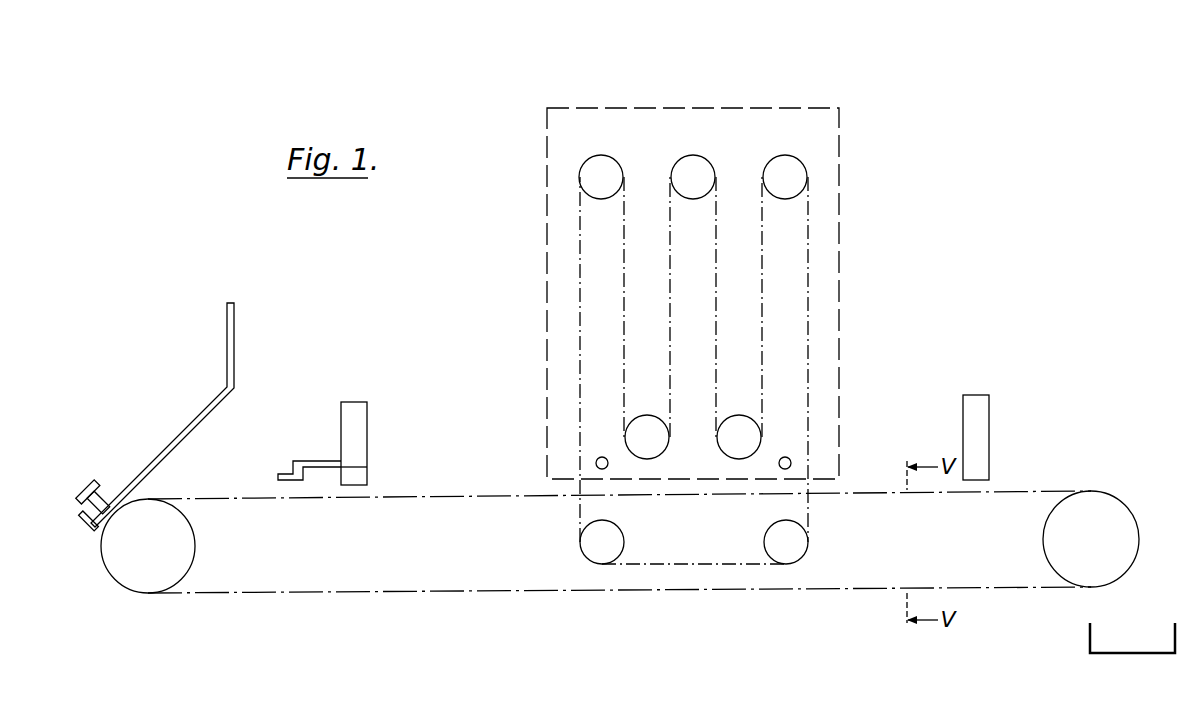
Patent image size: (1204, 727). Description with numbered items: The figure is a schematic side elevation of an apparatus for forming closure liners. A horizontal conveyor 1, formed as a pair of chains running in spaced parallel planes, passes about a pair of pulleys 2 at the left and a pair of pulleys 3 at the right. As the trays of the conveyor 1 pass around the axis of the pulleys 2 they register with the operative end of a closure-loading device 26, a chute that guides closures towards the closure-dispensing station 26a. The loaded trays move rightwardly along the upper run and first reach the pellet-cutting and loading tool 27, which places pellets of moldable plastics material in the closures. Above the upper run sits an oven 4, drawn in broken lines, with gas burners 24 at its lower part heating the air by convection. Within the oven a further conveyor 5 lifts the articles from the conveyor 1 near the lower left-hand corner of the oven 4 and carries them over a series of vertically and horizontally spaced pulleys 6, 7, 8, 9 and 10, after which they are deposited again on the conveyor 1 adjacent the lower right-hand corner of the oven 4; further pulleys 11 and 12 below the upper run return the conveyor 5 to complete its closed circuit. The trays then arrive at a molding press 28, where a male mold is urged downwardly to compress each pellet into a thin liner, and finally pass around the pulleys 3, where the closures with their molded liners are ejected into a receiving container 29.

The horizontal conveyor 1 is at (338, 593).
The pulleys 2 is at (150, 580).
The pulleys 3 is at (1090, 507).
The oven 4 is at (546, 200).
The further conveyor 5 is at (807, 257).
The pulley 6 is at (601, 168).
The pulley 7 is at (637, 435).
The pulley 8 is at (695, 168).
The pulley 9 is at (748, 427).
The pulley 10 is at (786, 168).
The pulley 11 is at (786, 550).
The pulley 12 is at (601, 555).
The gas burners 24 is at (596, 461).
The closure-loading device 26 is at (170, 442).
The closure-dispensing station 26a is at (103, 490).
The pellet-cutting and loading tool 27 is at (357, 400).
The molding press 28 is at (982, 392).
The receiving container 29 is at (1125, 637).